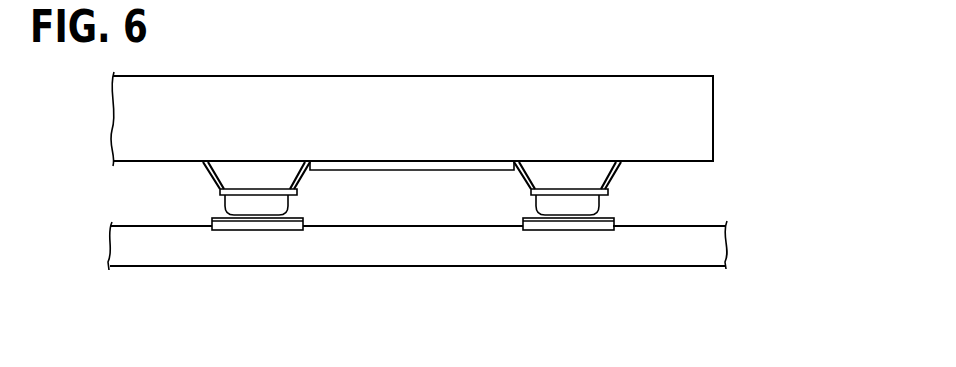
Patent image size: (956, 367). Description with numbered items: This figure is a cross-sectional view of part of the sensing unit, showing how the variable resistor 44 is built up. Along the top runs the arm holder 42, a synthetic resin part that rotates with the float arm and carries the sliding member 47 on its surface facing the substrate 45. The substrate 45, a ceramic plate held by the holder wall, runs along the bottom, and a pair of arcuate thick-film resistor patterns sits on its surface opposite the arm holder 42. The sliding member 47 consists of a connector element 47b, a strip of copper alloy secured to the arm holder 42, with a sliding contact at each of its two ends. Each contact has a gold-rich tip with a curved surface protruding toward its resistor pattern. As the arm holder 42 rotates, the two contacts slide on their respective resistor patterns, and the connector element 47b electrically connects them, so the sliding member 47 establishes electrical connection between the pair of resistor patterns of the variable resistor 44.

The arm holder 42 is at (714, 88).
The variable resistor 44 is at (74, 232).
The substrate 45 is at (700, 266).
The sliding member 47 is at (510, 313).
The connector element 47b is at (410, 163).